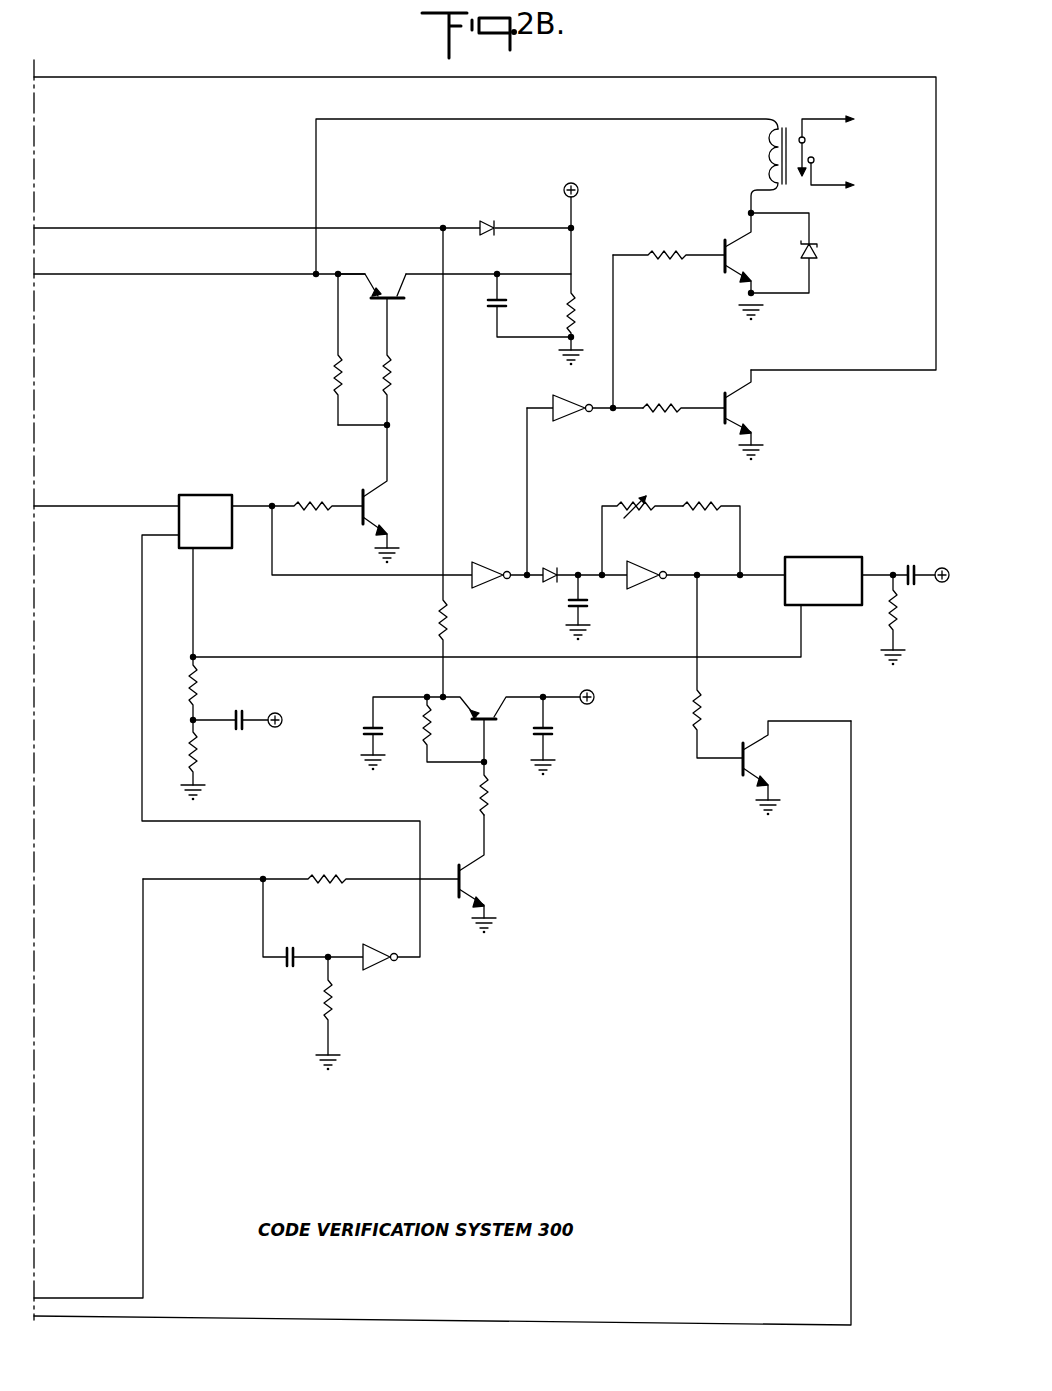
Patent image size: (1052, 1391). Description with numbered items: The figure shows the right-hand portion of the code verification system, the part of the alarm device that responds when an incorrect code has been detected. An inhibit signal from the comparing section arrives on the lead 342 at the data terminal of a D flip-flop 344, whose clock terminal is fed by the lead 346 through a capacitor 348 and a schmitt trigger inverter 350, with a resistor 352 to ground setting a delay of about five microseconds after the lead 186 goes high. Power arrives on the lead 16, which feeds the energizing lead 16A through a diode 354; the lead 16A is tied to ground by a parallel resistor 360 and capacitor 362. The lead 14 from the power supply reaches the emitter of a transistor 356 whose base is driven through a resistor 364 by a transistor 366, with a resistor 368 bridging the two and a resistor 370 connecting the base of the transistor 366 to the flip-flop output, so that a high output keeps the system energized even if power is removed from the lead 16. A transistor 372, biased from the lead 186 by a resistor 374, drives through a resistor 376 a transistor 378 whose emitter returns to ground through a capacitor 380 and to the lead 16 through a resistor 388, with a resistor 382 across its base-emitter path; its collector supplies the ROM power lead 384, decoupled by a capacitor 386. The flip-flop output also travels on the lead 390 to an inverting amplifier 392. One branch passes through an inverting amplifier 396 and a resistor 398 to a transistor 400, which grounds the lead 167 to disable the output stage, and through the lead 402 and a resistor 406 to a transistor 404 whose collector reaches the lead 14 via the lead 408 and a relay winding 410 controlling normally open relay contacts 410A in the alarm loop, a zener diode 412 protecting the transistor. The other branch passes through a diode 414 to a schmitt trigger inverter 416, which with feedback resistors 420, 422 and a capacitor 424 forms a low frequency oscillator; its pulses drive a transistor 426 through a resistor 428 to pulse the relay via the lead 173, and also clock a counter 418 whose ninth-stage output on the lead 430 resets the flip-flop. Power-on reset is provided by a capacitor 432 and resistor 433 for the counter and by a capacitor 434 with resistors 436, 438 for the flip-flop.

The lead 14 is at (150, 273).
The lead 16 is at (136, 227).
The energizing lead 16A is at (576, 183).
The lead 167 is at (150, 60).
The lead 173 is at (851, 960).
The lead 186 is at (143, 1018).
The lead 342 is at (93, 500).
The D flip-flop 344 is at (205, 493).
The lead 346 is at (142, 616).
The capacitor 348 is at (294, 945).
The schmitt trigger inverter 350 is at (374, 945).
The resistor 352 is at (324, 994).
The diode 354 is at (482, 222).
The transistor 356 is at (380, 275).
The resistor 360 is at (580, 288).
The capacitor 362 is at (507, 308).
The resistor 364 is at (387, 366).
The transistor 366 is at (380, 502).
The resistor 368 is at (330, 379).
The resistor 370 is at (310, 500).
The transistor 372 is at (488, 886).
The resistor 374 is at (330, 878).
The resistor 376 is at (494, 800).
The transistor 378 is at (486, 702).
The capacitor 380 is at (359, 730).
The resistor 382 is at (422, 740).
The lead 384 is at (594, 692).
The capacitor 386 is at (556, 730).
The resistor 388 is at (440, 616).
The lead 390 is at (308, 575).
The inverting amplifier 392 is at (480, 558).
The inverting amplifier 396 is at (556, 430).
The resistor 398 is at (660, 396).
The transistor 400 is at (758, 416).
The lead 402 is at (613, 330).
The transistor 404 is at (745, 254).
The resistor 406 is at (660, 249).
The lead 408 is at (628, 130).
The relay winding 410 is at (766, 147).
The relay contacts 410A is at (802, 182).
The zener diode 412 is at (817, 248).
The diode 414 is at (550, 563).
The schmitt trigger inverter 416 is at (654, 565).
The counter 418 is at (826, 557).
The resistor 420 is at (698, 492).
The resistor 422 is at (626, 490).
The capacitor 424 is at (562, 606).
The transistor 426 is at (760, 762).
The resistor 428 is at (686, 713).
The lead 430 is at (739, 656).
The capacitor 432 is at (910, 556).
The resistor 433 is at (885, 628).
The capacitor 434 is at (244, 712).
The resistor 436 is at (198, 684).
The resistor 438 is at (196, 770).